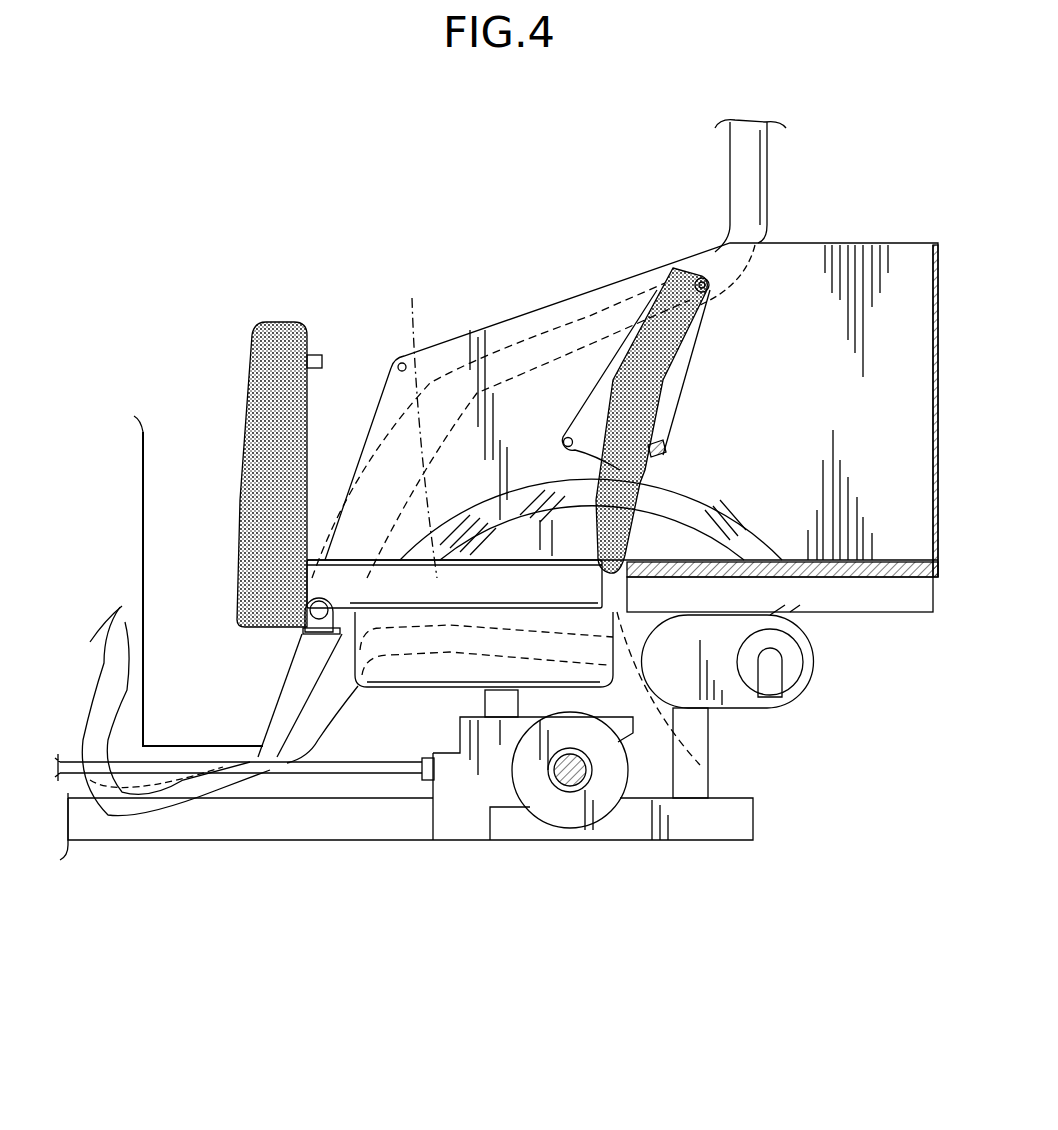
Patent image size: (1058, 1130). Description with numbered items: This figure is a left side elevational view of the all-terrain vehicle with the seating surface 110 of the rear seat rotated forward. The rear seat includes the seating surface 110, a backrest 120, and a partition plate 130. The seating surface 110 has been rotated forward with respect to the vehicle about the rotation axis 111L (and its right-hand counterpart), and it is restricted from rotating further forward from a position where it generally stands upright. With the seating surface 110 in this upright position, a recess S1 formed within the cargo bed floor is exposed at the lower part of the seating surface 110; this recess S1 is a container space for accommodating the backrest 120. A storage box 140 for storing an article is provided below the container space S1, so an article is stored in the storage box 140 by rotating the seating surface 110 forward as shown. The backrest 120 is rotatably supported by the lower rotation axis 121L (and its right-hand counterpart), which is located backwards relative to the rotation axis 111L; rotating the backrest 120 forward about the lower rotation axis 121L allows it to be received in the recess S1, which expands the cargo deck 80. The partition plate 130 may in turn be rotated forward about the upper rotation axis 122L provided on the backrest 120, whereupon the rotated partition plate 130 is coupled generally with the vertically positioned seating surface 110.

The cargo deck 80 is at (897, 243).
The seating surface 110 is at (275, 320).
The recess S1 is at (421, 424).
The backrest 120 is at (660, 292).
The upper rotation axis 122L is at (702, 278).
The partition plate 130 is at (688, 358).
The storage box 140 is at (360, 684).
The lower rotation axis 121L is at (680, 752).
The rotation axis 111L is at (312, 634).